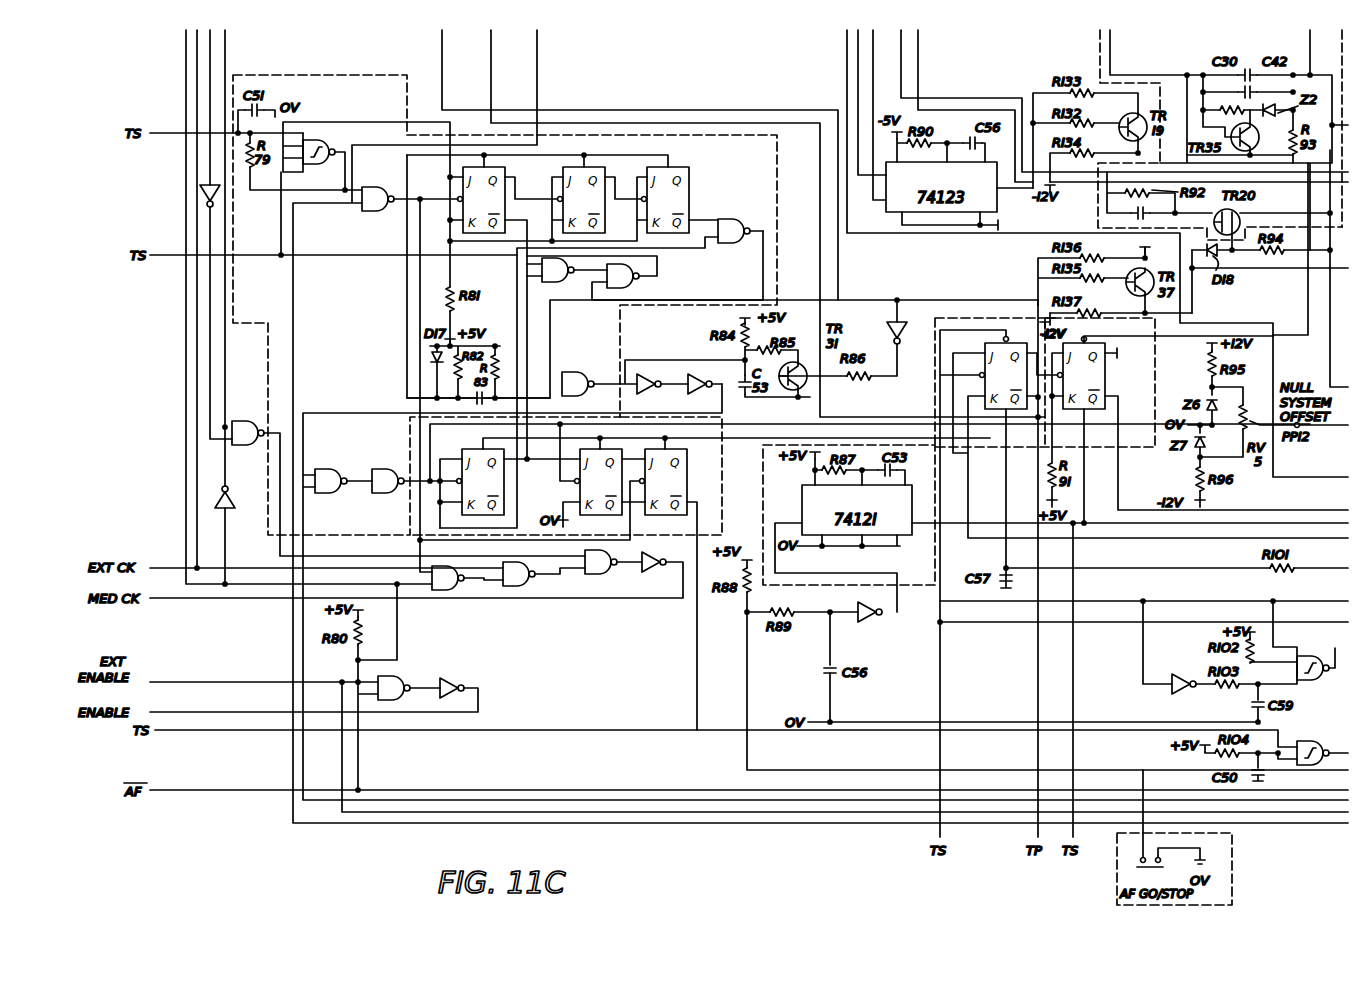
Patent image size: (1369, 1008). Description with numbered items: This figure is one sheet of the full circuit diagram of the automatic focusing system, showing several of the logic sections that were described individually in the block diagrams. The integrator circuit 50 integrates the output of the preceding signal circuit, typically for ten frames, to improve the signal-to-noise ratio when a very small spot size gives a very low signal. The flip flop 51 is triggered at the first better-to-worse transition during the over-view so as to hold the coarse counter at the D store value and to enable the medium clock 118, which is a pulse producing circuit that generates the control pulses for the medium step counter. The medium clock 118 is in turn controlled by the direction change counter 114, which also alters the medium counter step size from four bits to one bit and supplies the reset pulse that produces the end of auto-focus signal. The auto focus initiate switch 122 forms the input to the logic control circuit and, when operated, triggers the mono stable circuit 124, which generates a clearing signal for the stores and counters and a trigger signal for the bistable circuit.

The integrator circuit 50 is at (1089, 57).
The flip flop 51 is at (975, 316).
The direction change counter 114 is at (722, 480).
The medium clock 118 is at (358, 318).
The auto focus initiate switch 122 is at (1240, 849).
The mono stable circuit 124 is at (906, 598).